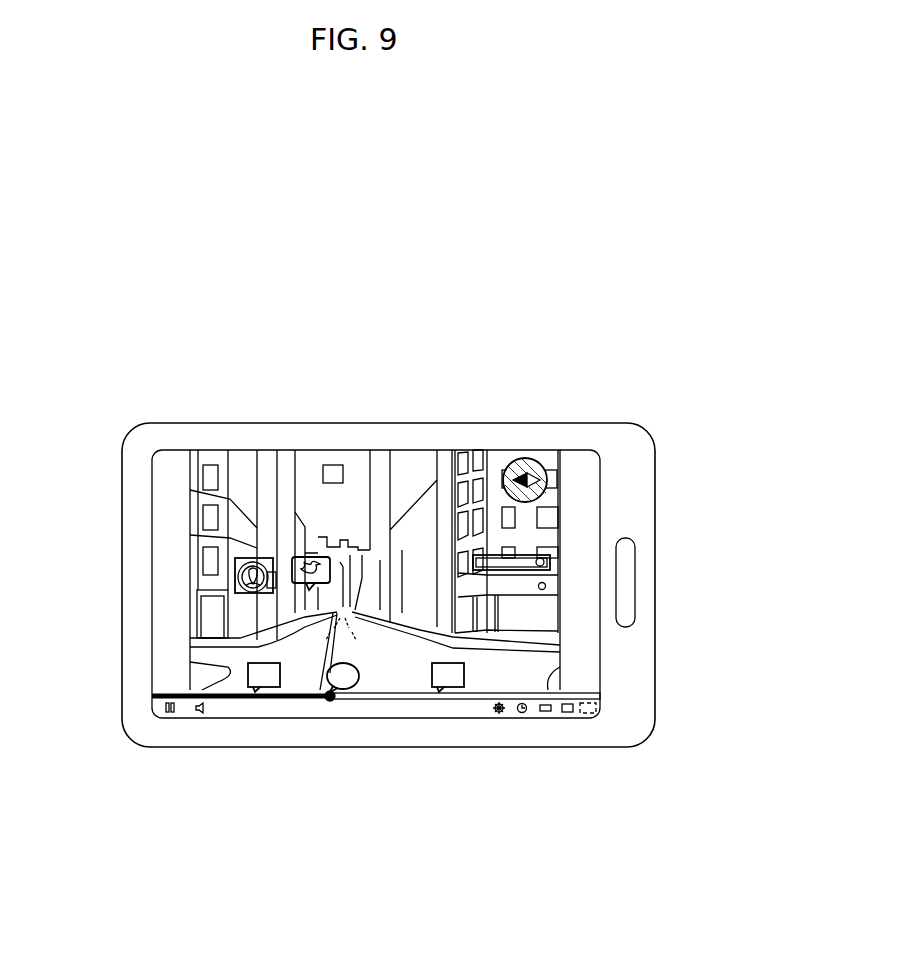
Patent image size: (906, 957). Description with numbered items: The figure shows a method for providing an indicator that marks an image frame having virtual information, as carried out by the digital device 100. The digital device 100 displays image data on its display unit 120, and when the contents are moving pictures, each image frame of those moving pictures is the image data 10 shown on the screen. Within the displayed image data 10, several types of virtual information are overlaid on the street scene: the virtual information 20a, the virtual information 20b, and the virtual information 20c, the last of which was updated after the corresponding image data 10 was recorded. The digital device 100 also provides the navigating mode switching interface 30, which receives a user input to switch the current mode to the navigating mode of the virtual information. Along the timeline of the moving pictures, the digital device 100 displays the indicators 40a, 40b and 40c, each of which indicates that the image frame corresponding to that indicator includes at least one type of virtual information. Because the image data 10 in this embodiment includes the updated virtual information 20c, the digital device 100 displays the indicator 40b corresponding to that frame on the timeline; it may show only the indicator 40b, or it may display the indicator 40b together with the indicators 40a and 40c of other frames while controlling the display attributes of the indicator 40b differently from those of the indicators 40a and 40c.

The digital device 100 is at (180, 747).
The image data 10 is at (360, 480).
The virtual information 20a is at (235, 572).
The virtual information 20b is at (530, 553).
The virtual information 20c is at (313, 557).
The navigating mode switching interface 30 is at (523, 460).
The indicator 40a is at (263, 680).
The indicator 40b is at (343, 680).
The indicator 40c is at (447, 678).
The display unit 120 is at (552, 747).